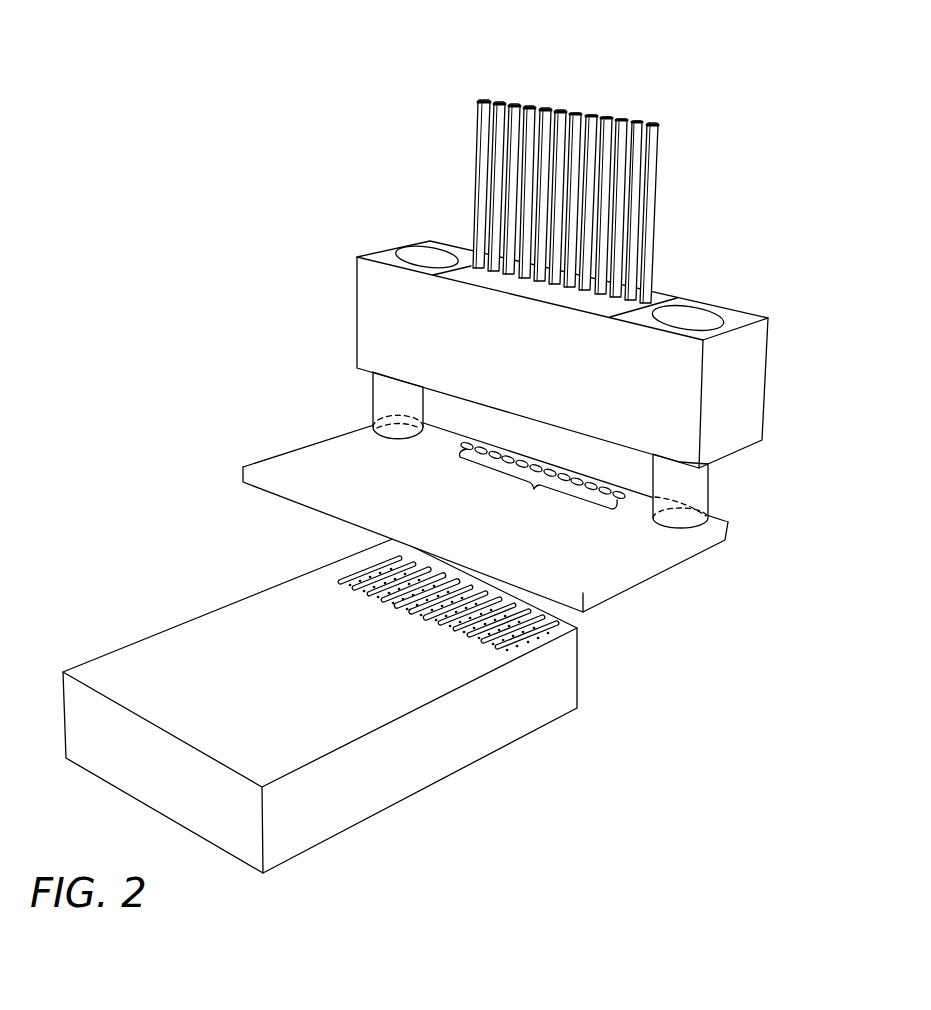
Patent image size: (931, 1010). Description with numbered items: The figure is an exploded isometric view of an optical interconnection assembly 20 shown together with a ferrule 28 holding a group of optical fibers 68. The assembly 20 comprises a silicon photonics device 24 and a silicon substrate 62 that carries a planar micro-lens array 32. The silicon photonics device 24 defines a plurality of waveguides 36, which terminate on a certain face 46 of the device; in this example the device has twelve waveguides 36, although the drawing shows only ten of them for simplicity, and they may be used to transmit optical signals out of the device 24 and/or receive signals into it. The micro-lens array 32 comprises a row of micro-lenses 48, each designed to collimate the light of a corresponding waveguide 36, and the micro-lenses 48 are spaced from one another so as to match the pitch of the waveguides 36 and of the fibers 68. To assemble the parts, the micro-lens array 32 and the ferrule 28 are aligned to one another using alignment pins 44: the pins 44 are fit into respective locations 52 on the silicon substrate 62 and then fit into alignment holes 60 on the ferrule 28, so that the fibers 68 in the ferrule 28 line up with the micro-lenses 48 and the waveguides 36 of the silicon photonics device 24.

The optical interconnection assembly 20 is at (82, 258).
The silicon photonics device 24 is at (470, 745).
The ferrule 28 is at (757, 385).
The planar micro-lens array 32 is at (539, 485).
The waveguides 36 is at (515, 638).
The alignment pins 44 is at (373, 400).
The face 46 is at (603, 655).
The micro-lenses 48 is at (467, 441).
The locations 52 is at (403, 440).
The alignment holes 60 is at (420, 245).
The silicon substrate 62 is at (630, 582).
The optical fibers 68 is at (487, 99).